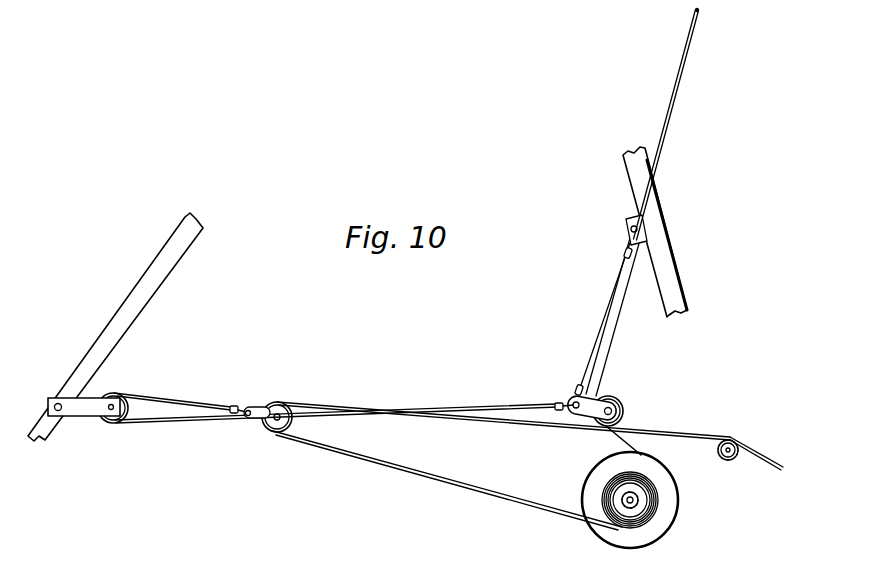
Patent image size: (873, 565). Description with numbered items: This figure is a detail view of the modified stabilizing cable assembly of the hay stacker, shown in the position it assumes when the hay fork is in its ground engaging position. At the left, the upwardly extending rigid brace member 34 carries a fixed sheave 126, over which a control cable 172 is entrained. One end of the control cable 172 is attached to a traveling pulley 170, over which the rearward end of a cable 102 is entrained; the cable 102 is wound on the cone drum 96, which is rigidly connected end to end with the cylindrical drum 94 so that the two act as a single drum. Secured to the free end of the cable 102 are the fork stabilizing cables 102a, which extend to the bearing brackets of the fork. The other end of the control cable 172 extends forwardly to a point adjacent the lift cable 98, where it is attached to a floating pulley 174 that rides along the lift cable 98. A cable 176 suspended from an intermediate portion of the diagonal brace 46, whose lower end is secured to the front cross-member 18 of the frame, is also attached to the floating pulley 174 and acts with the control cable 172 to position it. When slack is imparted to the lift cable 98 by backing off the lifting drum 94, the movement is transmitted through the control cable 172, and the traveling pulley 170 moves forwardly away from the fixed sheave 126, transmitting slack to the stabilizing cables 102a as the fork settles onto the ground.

The rigid brace member 34 is at (153, 286).
The fixed sheave 126 is at (111, 393).
The control cable 172 is at (175, 422).
The traveling pulley 170 is at (267, 412).
The fork stabilizing cables 102a is at (512, 423).
The cable 102 is at (457, 480).
The floating pulley 174 is at (600, 403).
The cable 176 is at (597, 335).
The diagonal brace 46 is at (670, 272).
The lift cable 98 is at (670, 125).
The cylindrical drum 94 is at (672, 472).
The cone drum 96 is at (643, 507).
The front cross-member 18 is at (738, 457).